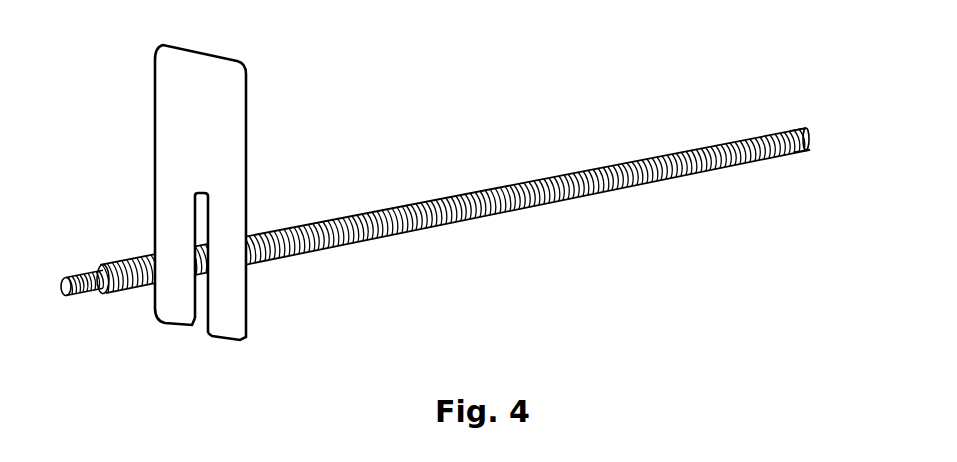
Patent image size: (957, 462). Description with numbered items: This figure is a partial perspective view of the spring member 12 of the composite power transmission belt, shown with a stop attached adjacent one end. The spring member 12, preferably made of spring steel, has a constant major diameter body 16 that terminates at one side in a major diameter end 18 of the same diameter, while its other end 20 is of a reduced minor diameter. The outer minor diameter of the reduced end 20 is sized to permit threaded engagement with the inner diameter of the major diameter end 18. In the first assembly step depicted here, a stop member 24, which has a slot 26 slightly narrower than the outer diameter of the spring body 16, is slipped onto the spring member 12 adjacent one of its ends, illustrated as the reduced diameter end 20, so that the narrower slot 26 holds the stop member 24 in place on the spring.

The spring member 12 is at (593, 198).
The major diameter body 16 is at (428, 197).
The major diameter end 18 is at (800, 123).
The reduced minor diameter end 20 is at (68, 295).
The stop member 24 is at (248, 83).
The slot 26 is at (195, 193).